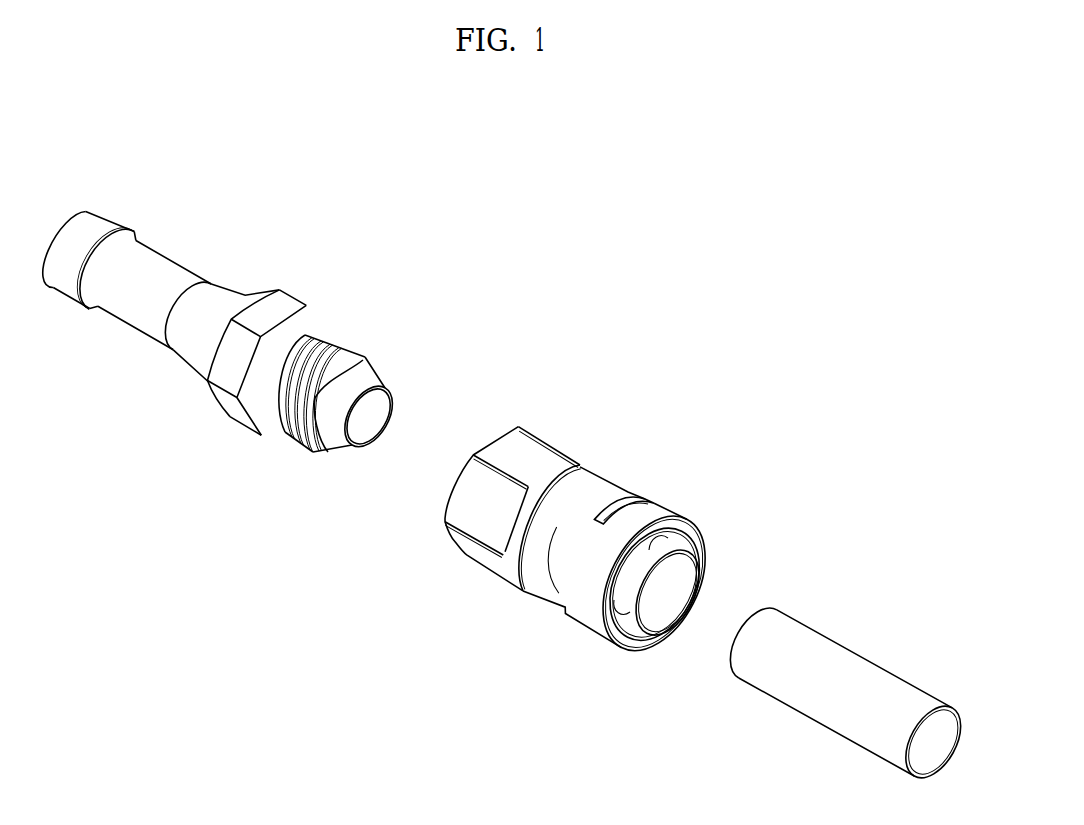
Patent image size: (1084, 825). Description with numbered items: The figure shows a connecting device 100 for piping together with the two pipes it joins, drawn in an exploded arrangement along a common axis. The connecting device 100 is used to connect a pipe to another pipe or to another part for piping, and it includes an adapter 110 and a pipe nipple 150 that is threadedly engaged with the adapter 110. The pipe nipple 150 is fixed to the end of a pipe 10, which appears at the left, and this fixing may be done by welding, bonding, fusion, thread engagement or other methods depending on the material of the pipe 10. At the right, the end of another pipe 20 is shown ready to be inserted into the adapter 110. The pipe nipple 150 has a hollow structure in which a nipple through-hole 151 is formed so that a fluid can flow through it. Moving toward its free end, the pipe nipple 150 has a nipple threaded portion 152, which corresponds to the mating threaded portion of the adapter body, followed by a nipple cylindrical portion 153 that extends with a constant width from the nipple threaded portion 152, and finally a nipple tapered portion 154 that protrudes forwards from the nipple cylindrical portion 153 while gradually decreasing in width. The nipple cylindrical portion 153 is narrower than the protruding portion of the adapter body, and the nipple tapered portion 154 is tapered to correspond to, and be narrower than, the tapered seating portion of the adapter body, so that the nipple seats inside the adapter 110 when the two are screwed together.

The pipe 10 is at (239, 353).
The another pipe 20 is at (853, 662).
The connecting device for piping 100 is at (575, 442).
The adapter 110 is at (650, 422).
The pipe nipple 150 is at (352, 390).
The nipple through-hole 151 is at (374, 430).
The nipple threaded portion 152 is at (287, 452).
The nipple cylindrical portion 153 is at (352, 377).
The nipple tapered portion 154 is at (338, 436).